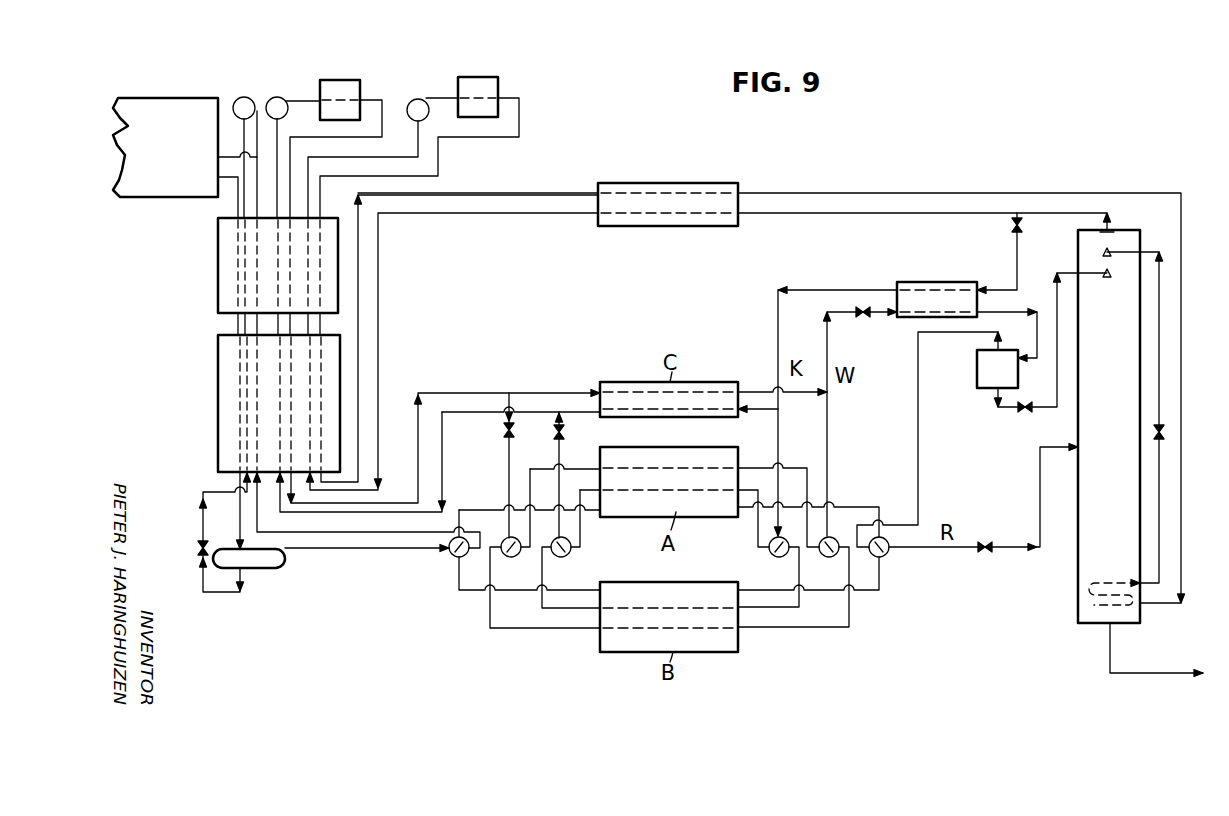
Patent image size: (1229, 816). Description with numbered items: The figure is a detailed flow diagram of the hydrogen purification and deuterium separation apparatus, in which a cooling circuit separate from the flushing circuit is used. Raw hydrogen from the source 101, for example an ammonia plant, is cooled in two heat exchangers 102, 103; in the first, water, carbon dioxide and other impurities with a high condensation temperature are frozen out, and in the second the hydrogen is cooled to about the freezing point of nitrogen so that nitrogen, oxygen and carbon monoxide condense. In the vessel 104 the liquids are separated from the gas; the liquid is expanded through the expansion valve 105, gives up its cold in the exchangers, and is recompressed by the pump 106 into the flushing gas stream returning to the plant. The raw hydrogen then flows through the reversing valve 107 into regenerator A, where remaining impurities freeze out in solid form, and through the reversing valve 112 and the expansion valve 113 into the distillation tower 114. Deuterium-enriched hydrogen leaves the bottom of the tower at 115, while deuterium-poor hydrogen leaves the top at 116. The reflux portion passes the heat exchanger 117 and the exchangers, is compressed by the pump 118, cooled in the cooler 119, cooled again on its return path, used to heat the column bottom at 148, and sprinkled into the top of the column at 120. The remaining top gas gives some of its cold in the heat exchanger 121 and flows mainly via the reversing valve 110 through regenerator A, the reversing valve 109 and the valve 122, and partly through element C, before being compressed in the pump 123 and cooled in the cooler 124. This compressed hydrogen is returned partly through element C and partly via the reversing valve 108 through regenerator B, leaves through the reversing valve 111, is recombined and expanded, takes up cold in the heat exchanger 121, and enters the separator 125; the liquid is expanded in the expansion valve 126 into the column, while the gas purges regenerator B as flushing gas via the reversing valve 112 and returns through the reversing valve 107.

The source for the raw hydrogen 101 is at (185, 158).
The heat exchanger 102 is at (218, 262).
The heat exchanger 103 is at (218, 394).
The vessel 104 is at (343, 88).
The expansion valve 105 is at (198, 549).
The pump 106 is at (244, 97).
The reversing valve 107 is at (452, 556).
The reversing valve 108 is at (508, 557).
The reversing valve 109 is at (566, 557).
The reversing valve 110 is at (773, 557).
The reversing valve 111 is at (823, 557).
The reversing valve 112 is at (884, 557).
The expansion valve 113 is at (983, 552).
The distillation tower 114 is at (1078, 553).
The bottom of the tower 115 is at (1156, 666).
The top of the column 116 is at (1109, 222).
The heat exchanger 117 is at (681, 183).
The pump 118 is at (422, 98).
The cooler 119 is at (489, 85).
The top of the column sprinkling point 120 is at (1100, 253).
The heat exchanger 121 is at (922, 282).
The valve 122 is at (565, 431).
The pump 123 is at (281, 97).
The cooler 124 is at (861, 318).
The separator 125 is at (977, 372).
The expansion valve 126 is at (1023, 412).
The bottom of the distillation column heating point 148 is at (1130, 597).